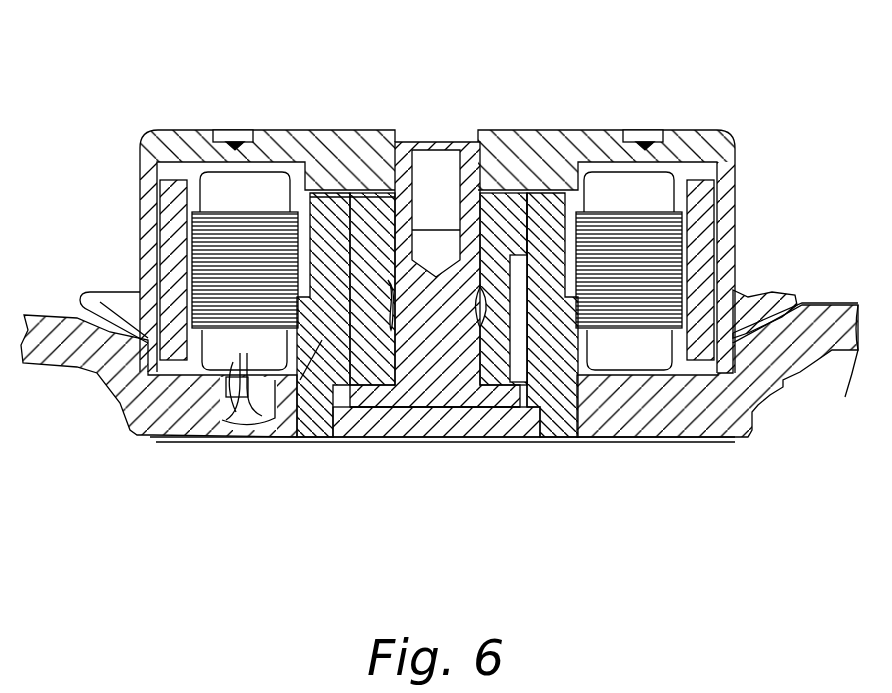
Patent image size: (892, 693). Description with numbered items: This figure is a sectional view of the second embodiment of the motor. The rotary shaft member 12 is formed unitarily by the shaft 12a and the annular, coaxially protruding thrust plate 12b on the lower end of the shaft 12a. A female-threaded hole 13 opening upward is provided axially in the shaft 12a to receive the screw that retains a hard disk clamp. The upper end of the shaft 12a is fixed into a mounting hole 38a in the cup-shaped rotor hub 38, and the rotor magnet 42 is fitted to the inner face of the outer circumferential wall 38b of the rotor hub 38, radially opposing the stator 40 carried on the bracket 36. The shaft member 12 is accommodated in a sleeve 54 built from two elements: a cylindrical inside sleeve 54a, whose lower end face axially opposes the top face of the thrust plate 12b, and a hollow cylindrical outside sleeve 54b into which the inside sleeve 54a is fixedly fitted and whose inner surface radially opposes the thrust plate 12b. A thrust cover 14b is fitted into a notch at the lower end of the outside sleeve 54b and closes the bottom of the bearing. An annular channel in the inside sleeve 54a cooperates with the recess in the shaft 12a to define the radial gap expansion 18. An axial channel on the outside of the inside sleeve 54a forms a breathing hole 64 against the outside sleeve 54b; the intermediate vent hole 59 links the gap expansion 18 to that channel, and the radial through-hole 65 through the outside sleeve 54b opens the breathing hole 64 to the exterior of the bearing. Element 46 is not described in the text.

The rotary shaft member 12 is at (398, 128).
The shaft 12a is at (375, 225).
The thrust plate 12b is at (392, 440).
The female-threaded hole 13 is at (425, 230).
The thrust cover 14b is at (475, 440).
The radial gap expansion 18 is at (484, 288).
The bracket 36 is at (828, 300).
The rotor hub 38 is at (691, 128).
The mounting hole 38a is at (455, 178).
The outer circumferential wall 38b is at (147, 230).
The stator 40 is at (227, 217).
The rotor magnet 42 is at (170, 203).
The mounting flange 46 is at (740, 333).
The sleeve 54 is at (567, 190).
The inside sleeve 54a is at (330, 187).
The outside sleeve 54b is at (257, 440).
The intermediate vent hole 59 is at (513, 254).
The breathing hole 64 is at (587, 440).
The radial through-hole 65 is at (572, 192).